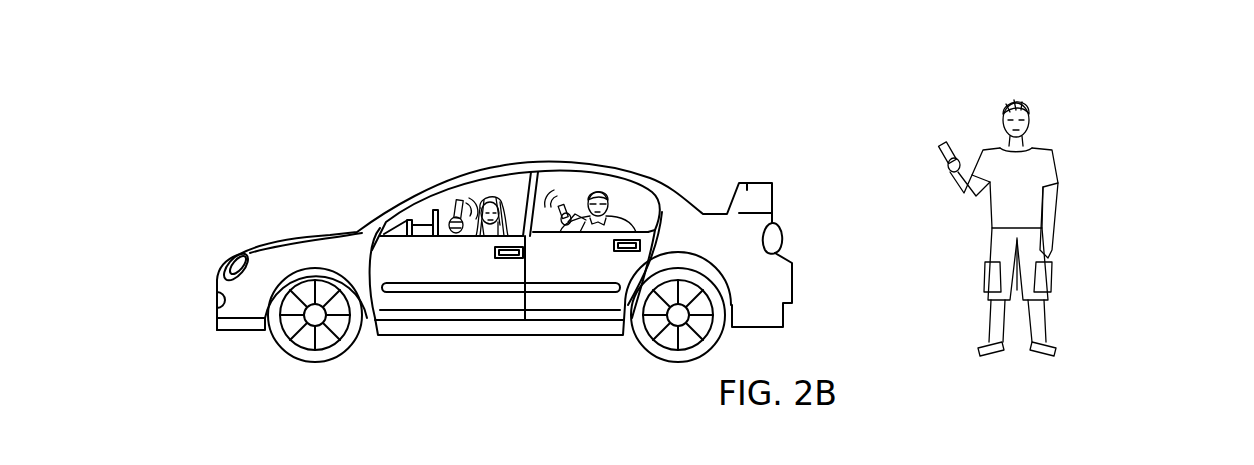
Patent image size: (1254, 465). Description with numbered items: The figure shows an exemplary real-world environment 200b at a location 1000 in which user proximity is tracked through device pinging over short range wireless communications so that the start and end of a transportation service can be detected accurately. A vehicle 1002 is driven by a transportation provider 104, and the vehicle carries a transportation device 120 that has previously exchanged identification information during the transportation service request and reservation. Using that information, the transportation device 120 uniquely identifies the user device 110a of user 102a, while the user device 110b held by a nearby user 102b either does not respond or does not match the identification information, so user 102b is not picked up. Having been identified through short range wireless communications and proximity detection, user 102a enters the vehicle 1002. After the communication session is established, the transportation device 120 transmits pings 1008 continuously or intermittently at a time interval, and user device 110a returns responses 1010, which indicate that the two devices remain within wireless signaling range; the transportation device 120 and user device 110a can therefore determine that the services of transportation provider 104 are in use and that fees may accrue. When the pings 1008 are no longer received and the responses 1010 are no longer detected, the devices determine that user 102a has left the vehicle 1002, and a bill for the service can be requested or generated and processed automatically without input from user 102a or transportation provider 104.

The location 1000 is at (742, 61).
The vehicle 1002 is at (281, 234).
The transportation provider 104 is at (490, 197).
The pings 1008 is at (460, 200).
The transportation device 120 is at (458, 203).
The user 102a is at (613, 197).
The user device 110a is at (556, 208).
The responses 1010 is at (552, 190).
The environment 200b is at (1185, 67).
The user 102b is at (1015, 98).
The user device 110b is at (943, 143).